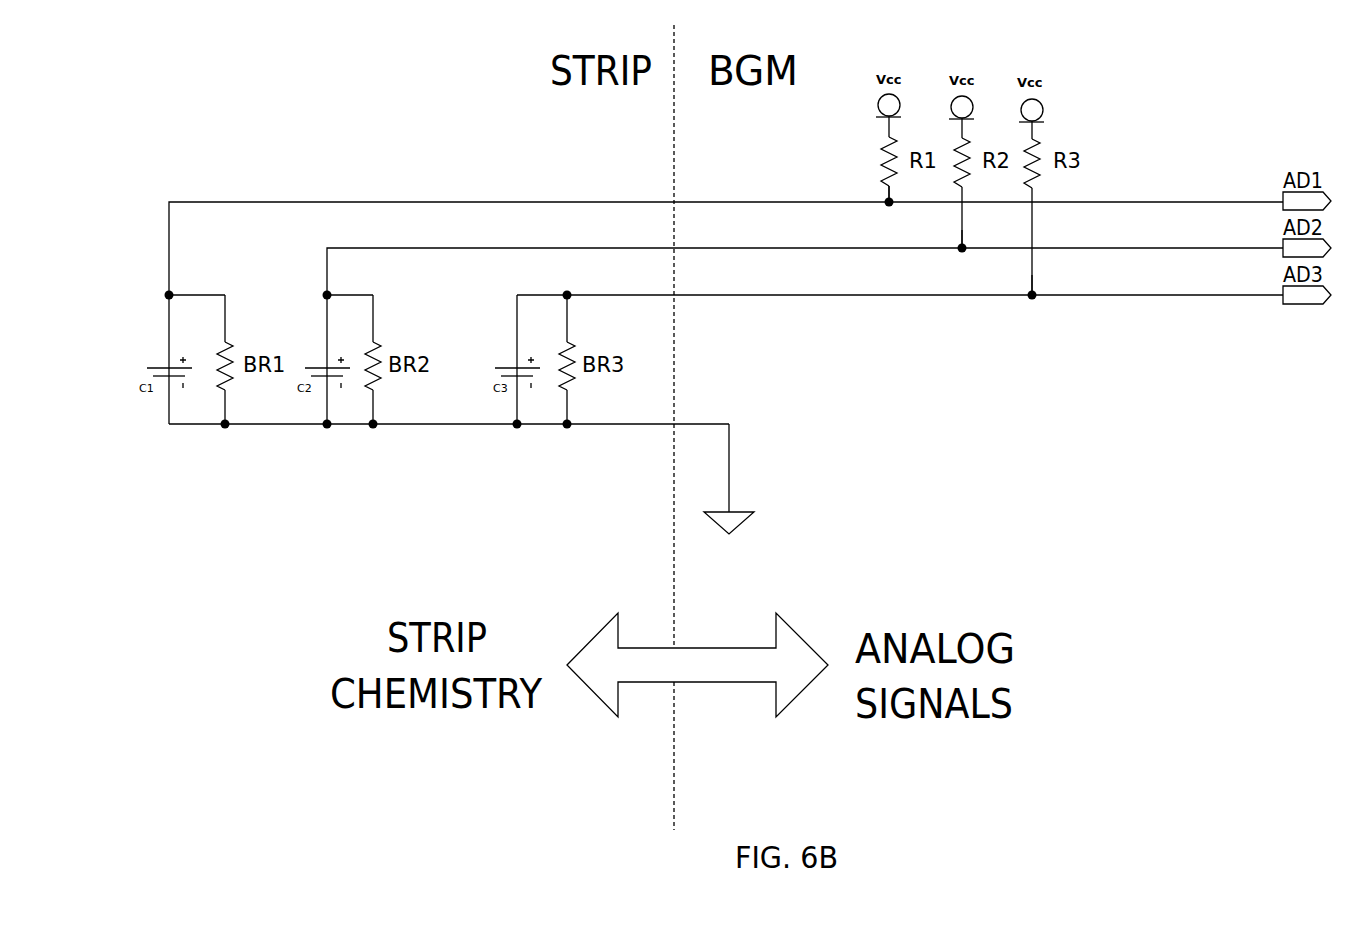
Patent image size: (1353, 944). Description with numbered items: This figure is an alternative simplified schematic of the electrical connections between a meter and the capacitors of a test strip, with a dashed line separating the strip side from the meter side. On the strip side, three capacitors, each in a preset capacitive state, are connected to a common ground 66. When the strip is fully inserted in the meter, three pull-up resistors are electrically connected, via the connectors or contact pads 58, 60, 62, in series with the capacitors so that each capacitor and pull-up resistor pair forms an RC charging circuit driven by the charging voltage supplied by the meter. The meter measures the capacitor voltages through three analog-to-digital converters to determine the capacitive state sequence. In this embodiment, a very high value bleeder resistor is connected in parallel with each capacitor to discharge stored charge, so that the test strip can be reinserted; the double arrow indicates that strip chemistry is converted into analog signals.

The connector 58 is at (888, 207).
The connector 60 is at (960, 253).
The connector 62 is at (1031, 299).
The common ground 66 is at (729, 493).